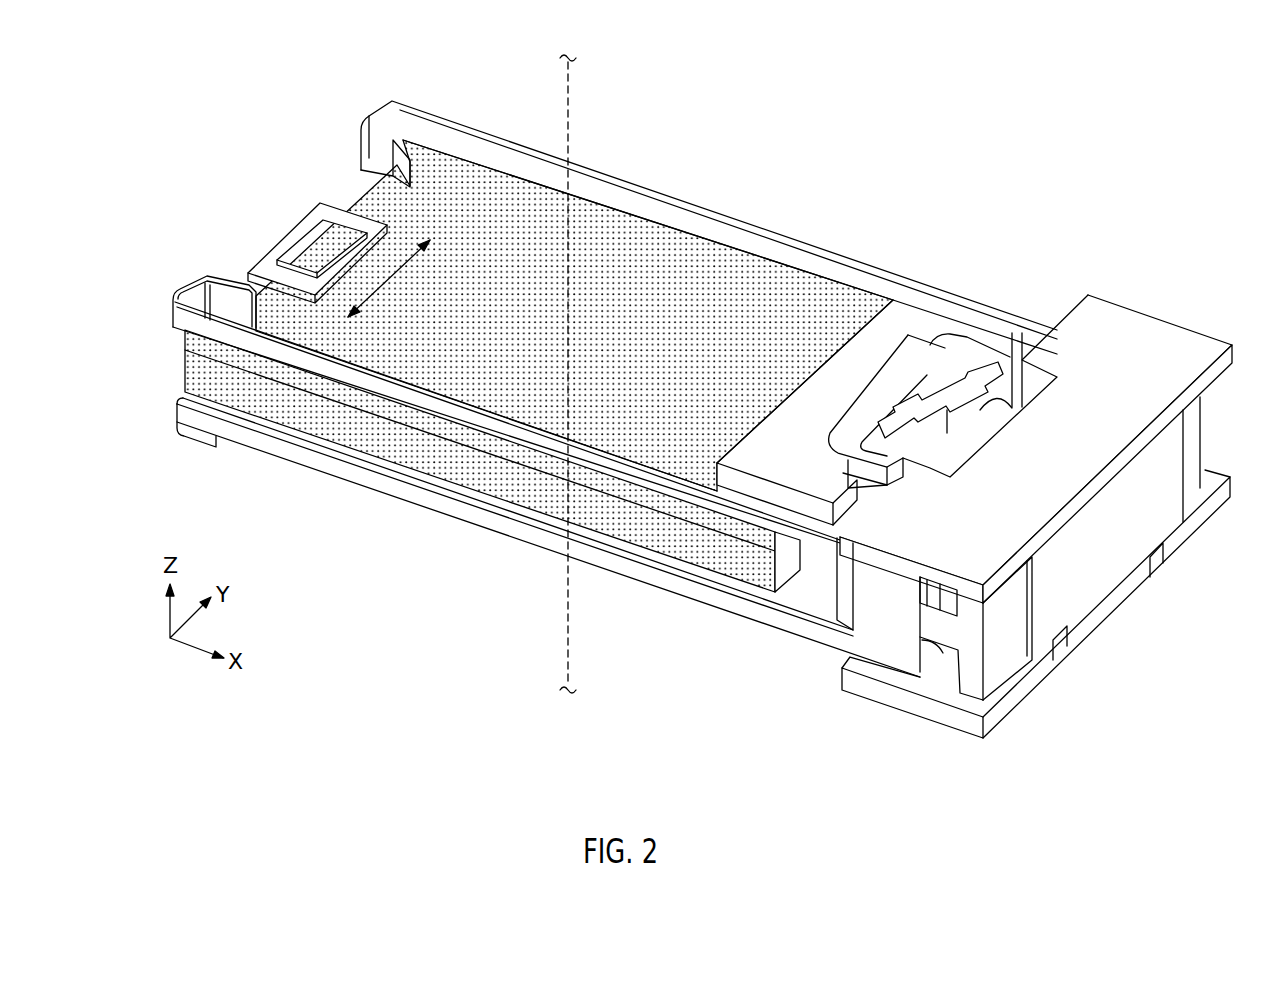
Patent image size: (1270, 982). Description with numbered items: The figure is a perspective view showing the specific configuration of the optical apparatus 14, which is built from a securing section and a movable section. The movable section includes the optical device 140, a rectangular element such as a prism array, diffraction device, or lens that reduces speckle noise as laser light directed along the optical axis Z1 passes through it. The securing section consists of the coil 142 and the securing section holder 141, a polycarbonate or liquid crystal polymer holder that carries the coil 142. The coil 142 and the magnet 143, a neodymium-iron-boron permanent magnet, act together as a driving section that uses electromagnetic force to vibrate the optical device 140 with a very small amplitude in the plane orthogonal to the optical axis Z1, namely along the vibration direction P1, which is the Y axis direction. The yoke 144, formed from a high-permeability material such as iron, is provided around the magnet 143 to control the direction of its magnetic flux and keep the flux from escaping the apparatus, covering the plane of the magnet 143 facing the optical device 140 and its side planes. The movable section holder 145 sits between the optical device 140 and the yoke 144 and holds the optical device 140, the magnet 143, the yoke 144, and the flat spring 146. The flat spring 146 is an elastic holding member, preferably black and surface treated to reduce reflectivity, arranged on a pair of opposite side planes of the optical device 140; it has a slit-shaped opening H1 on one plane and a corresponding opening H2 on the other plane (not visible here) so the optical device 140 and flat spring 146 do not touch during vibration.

The optical apparatus 14 is at (986, 78).
The optical device 140 is at (447, 373).
The securing section holder 141 is at (1107, 600).
The coil 142 is at (963, 450).
The magnet 143 is at (973, 372).
The yoke 144 is at (914, 368).
The movable section holder 145 is at (862, 352).
The flat spring 146 is at (471, 130).
The opening H1 is at (800, 582).
The opening H2 is at (660, 183).
The vibration direction P1 is at (407, 257).
The optical axis Z1 is at (572, 106).